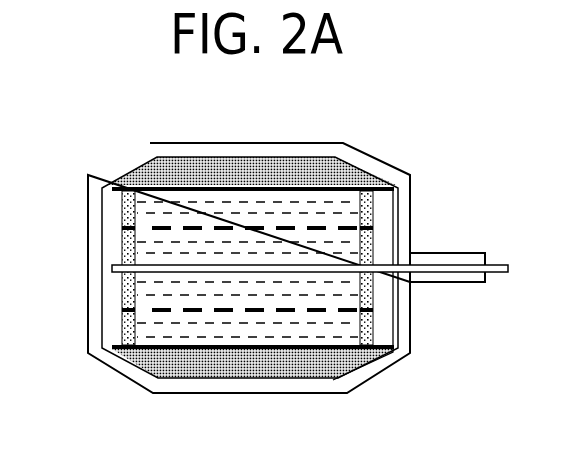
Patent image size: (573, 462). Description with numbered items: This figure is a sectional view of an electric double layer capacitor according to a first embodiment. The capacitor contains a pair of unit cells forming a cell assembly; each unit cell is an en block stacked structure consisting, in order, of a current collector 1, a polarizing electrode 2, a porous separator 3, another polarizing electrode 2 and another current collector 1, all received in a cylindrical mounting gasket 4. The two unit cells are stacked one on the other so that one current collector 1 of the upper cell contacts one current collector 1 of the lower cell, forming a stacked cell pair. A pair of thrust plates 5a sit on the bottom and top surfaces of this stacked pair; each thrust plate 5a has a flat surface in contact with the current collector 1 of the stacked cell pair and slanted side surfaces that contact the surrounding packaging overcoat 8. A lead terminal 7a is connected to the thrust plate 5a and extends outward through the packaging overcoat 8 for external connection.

The current collector 1 is at (231, 193).
The polarizing electrode 2 is at (353, 325).
The porous separator 3 is at (291, 222).
The mounting gasket 4 is at (113, 213).
The thrust plate 5a is at (360, 171).
The lead terminal 7a is at (497, 263).
The packaging overcoat 8 is at (125, 156).